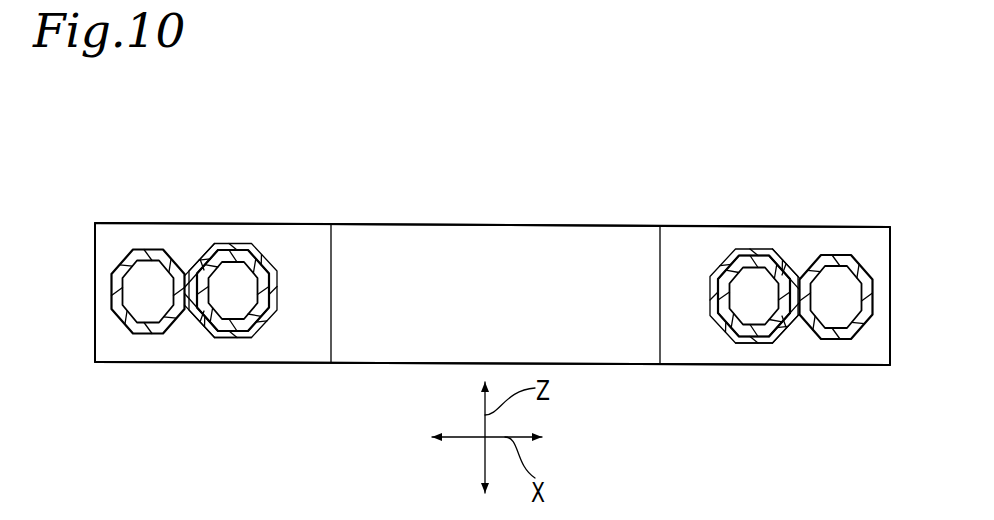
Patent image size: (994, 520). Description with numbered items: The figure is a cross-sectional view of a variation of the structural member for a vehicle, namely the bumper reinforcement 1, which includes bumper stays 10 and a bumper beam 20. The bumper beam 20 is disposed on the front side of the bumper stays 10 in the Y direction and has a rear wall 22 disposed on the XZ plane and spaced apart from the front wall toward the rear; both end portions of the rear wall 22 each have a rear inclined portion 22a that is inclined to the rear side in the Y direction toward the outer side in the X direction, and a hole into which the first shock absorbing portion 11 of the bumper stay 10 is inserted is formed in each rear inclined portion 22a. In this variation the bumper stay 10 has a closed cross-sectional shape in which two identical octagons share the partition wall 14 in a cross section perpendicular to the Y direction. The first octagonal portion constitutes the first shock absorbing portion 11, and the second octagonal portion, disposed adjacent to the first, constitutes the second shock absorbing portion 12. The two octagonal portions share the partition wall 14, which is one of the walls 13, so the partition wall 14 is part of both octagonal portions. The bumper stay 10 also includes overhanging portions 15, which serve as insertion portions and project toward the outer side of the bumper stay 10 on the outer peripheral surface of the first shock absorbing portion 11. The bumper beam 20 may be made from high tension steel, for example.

The bumper reinforcement 1 is at (535, 162).
The bumper stay 10 is at (184, 353).
The first shock absorbing portion 11 is at (291, 300).
The second shock absorbing portion 12 is at (104, 284).
The walls 13 is at (117, 261).
The partition wall 14 is at (203, 279).
The overhanging portion 15 is at (223, 338).
The bumper beam 20 is at (590, 378).
The rear wall 22 is at (478, 238).
The rear inclined portion 22a is at (331, 224).